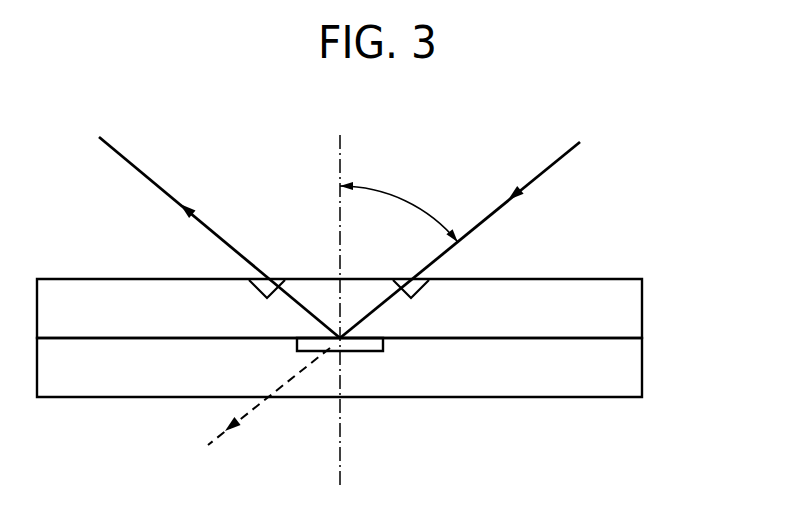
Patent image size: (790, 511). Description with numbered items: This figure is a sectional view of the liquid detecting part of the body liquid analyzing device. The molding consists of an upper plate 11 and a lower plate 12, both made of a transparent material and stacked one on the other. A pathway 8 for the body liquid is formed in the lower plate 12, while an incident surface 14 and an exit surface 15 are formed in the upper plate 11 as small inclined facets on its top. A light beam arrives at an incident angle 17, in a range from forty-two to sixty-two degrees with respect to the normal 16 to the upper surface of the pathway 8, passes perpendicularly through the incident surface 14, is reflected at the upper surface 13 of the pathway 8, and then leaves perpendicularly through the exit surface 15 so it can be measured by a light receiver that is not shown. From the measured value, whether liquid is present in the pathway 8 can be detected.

The pathway 8 is at (350, 351).
The upper plate 11 is at (642, 312).
The lower plate 12 is at (642, 372).
The upper surface of the pathway 13 is at (312, 341).
The incident surface 14 is at (413, 300).
The exit surface 15 is at (263, 302).
The normal 16 is at (340, 173).
The incident angle 17 is at (397, 197).